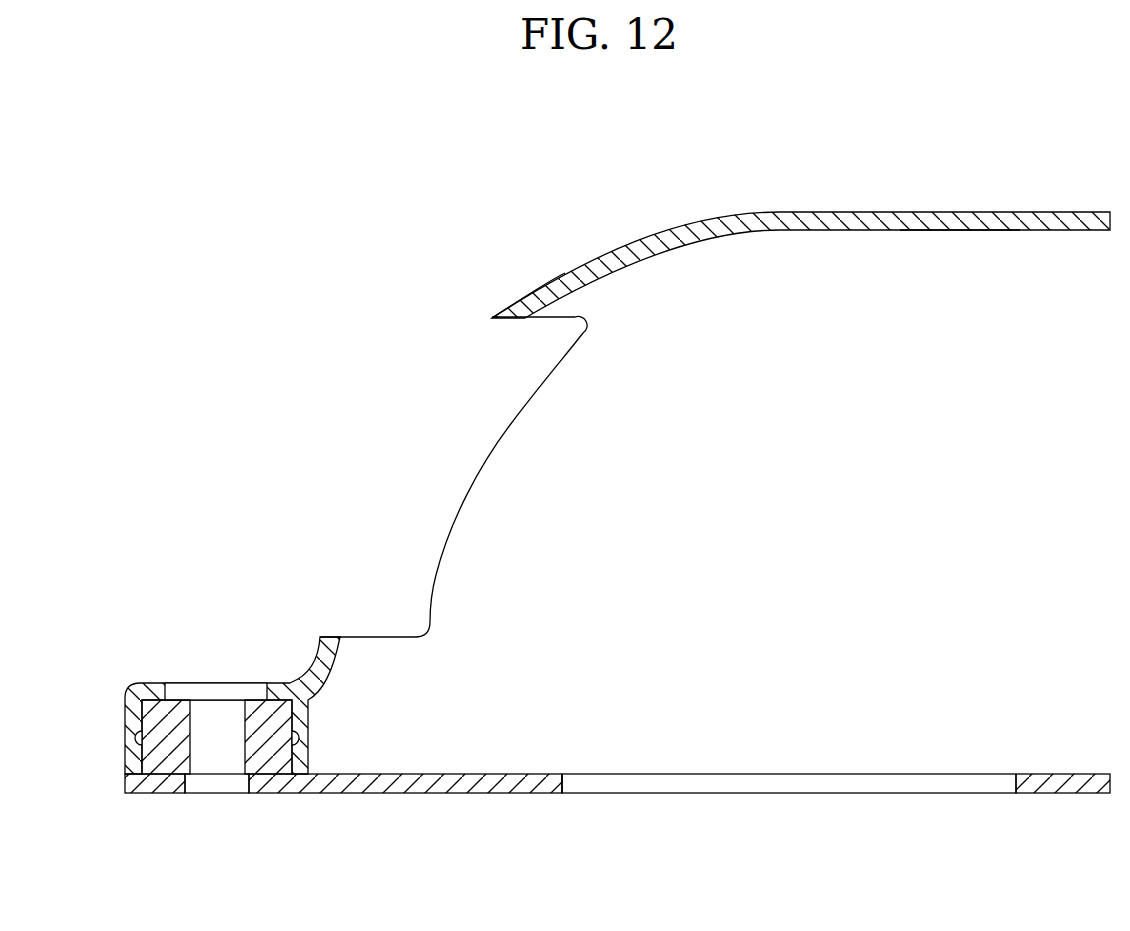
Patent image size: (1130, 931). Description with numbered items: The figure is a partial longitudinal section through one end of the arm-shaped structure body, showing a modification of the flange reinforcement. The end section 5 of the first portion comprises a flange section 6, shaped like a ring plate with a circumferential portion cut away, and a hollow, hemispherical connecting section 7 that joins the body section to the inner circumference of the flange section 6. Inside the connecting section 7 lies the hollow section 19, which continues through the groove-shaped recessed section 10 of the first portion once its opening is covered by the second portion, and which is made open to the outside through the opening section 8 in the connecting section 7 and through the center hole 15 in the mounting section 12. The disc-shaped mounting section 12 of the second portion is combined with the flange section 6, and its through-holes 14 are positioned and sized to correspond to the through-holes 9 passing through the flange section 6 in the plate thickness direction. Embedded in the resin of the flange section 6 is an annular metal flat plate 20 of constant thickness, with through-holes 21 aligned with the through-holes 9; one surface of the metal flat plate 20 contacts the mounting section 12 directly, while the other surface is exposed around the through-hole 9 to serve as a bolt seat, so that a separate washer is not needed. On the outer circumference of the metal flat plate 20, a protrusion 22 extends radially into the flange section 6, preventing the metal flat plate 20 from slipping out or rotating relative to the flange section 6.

The end section 5 is at (636, 229).
The connecting section 7 is at (560, 267).
The recessed section 10 is at (957, 232).
The opening section 8 is at (470, 486).
The through-hole 9 is at (267, 697).
The flange section 6 is at (127, 713).
The protrusion 22 is at (140, 737).
The metal flat plate 20 is at (287, 713).
The through-hole 21 is at (190, 752).
The through-hole 14 is at (246, 786).
The mounting section 12 is at (438, 795).
The center hole 15 is at (565, 785).
The hollow section 19 is at (1047, 767).